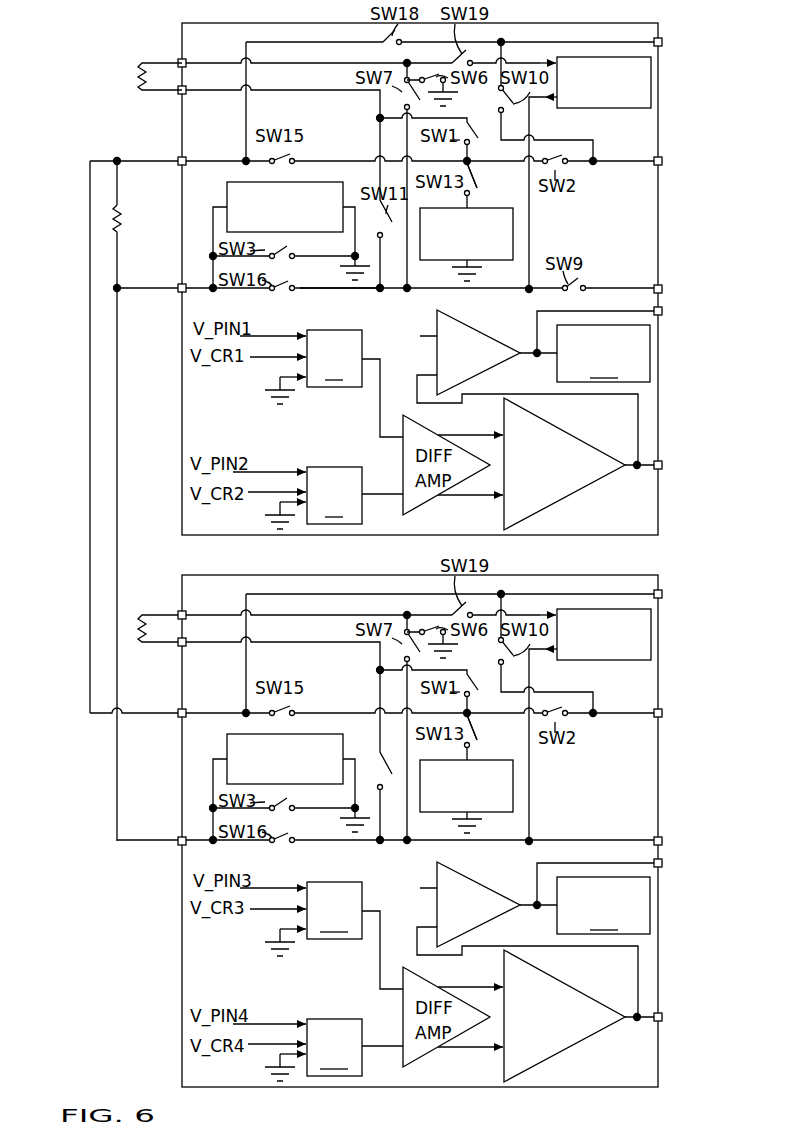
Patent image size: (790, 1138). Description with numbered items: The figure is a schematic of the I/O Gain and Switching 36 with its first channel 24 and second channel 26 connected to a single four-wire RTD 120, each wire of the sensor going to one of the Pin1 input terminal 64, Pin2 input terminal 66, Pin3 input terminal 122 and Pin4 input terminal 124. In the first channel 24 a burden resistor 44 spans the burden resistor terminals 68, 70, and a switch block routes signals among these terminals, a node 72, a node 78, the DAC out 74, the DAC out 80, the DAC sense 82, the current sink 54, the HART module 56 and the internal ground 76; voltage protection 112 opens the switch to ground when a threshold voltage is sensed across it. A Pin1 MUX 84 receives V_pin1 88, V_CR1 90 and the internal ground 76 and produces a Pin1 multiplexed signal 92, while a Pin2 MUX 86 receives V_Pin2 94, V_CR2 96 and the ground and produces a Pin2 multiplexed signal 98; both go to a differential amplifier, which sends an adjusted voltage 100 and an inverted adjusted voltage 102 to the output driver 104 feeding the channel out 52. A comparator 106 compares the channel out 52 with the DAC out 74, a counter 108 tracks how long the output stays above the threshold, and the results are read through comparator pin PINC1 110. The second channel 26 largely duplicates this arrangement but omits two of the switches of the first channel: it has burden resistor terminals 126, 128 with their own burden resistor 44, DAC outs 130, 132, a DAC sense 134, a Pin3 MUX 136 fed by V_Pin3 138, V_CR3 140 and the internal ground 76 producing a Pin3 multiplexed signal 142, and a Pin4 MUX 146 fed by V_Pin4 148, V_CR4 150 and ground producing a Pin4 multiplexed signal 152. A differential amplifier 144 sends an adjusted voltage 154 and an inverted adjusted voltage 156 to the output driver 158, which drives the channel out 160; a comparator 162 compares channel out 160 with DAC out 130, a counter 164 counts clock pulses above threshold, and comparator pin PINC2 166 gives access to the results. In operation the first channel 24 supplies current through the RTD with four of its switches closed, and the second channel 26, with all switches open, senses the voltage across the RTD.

The first channel 24 is at (625, 538).
The second channel 26 is at (625, 1090).
The I/O Gain and Switching 36 is at (86, 818).
The burden resistor 44 is at (140, 72).
The channel out 52 is at (682, 500).
The current sink 54 is at (482, 268).
The HART module 56 is at (598, 109).
The Pin1 input terminal 64 is at (180, 170).
The Pin2 input terminal 66 is at (180, 296).
The burden resistor terminal 68 is at (176, 60).
The burden resistor terminal 70 is at (178, 92).
The node 72 is at (477, 174).
The DAC out 74 is at (680, 185).
The internal ground 76 is at (455, 106).
The node 78 is at (390, 286).
The DAC out 80 is at (664, 286).
The DAC sense 82 is at (688, 70).
The Pin1 MUX 84 is at (334, 358).
The Pin2 MUX 86 is at (334, 495).
The V_pin1 88 is at (262, 336).
The V_CR1 90 is at (275, 357).
The Pin1 multiplexed signal 92 is at (378, 402).
The V_Pin2 94 is at (262, 472).
The V_CR2 96 is at (275, 493).
The Pin2 multiplexed signal 98 is at (384, 492).
The adjusted voltage 100 is at (456, 433).
The inverted adjusted voltage 102 is at (478, 499).
The output driver 104 is at (566, 506).
The comparator 106 is at (478, 328).
The counter 108 is at (603, 353).
The comparator pin PINC1 110 is at (672, 336).
The voltage protection 112 is at (226, 198).
The 4-wire RTD 120 is at (122, 224).
The Pin3 input terminal 122 is at (180, 722).
The Pin4 input terminal 124 is at (180, 848).
The burden resistor terminal 126 is at (178, 614).
The burden resistor terminal 128 is at (178, 644).
The DAC out 130 is at (545, 803).
The DAC out 132 is at (664, 836).
The DAC sense 134 is at (678, 636).
The Pin3 MUX 136 is at (334, 910).
The V_Pin3 138 is at (262, 888).
The V_CR3 140 is at (275, 909).
The Pin3 multiplexed signal 142 is at (378, 954).
The differential amplifier 144 is at (412, 1064).
The Pin4 MUX 146 is at (334, 1047).
The V_Pin4 148 is at (262, 1024).
The V_CR4 150 is at (275, 1045).
The Pin4 multiplexed signal 152 is at (384, 1044).
The adjusted voltage 154 is at (456, 985).
The inverted adjusted voltage 156 is at (478, 1051).
The output driver 158 is at (566, 1058).
The channel out 160 is at (682, 1052).
The comparator 162 is at (478, 880).
The counter 164 is at (603, 905).
The comparator pin PINC2 166 is at (672, 892).